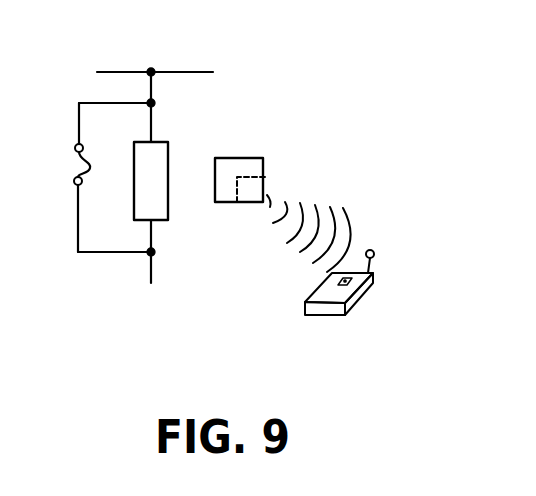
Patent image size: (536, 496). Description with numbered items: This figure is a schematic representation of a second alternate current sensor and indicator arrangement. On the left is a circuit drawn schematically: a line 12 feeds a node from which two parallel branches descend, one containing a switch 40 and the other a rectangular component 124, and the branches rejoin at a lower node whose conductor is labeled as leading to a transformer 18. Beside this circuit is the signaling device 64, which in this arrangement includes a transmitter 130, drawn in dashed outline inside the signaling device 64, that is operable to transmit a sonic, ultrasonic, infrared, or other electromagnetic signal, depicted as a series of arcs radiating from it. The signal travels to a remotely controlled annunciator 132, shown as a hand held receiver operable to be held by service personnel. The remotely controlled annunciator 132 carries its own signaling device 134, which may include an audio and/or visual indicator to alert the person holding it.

The power line 12 is at (108, 72).
The switch 40 is at (75, 163).
The resistor 124 is at (170, 207).
The transformer 18 is at (152, 326).
The signaling device 64 is at (240, 158).
The transmitter 130 is at (238, 203).
The remotely controlled annunciator 132 is at (325, 308).
The signaling device 134 is at (373, 278).